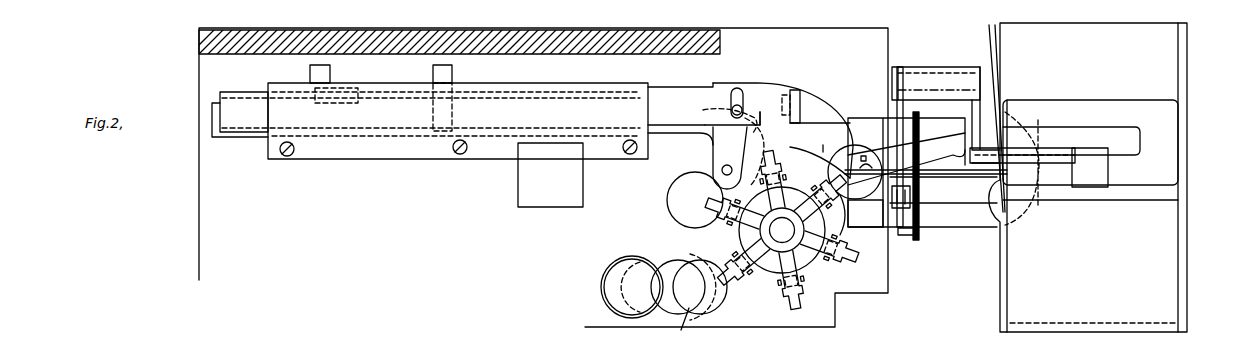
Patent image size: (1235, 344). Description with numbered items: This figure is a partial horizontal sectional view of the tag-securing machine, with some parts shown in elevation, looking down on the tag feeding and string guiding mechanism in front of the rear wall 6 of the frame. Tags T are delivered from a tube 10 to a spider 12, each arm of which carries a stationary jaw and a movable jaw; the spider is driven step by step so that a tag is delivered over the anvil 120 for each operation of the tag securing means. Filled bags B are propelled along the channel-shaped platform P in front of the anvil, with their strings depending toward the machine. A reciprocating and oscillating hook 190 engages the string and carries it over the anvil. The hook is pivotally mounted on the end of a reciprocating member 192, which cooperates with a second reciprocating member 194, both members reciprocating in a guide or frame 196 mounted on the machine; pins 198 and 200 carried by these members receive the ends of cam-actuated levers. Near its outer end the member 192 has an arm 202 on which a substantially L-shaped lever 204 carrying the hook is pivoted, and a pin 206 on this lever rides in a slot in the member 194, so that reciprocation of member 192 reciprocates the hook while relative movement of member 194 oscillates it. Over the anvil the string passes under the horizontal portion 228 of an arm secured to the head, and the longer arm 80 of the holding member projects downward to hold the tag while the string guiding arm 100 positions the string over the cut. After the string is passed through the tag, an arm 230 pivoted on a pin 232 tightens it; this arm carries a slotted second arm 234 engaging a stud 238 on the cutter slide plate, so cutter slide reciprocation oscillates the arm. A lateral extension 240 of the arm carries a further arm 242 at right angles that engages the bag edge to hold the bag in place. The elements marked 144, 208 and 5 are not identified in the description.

The rear wall 6 is at (199, 43).
The tube 10 is at (602, 284).
The spider 12 is at (778, 288).
The arm of holding member 80 is at (864, 158).
The string guiding arm 100 is at (926, 172).
The anvil 120 is at (862, 221).
The bracket block 144 is at (518, 193).
The hook 190 is at (816, 115).
The reciprocating member 192 is at (706, 135).
The second reciprocating member 194 is at (658, 99).
The guide or frame 196 is at (527, 103).
The pin 198 is at (452, 70).
The pin 200 is at (331, 75).
The arm 202 is at (708, 152).
The L-shaped lever 204 is at (763, 143).
The pin 206 is at (742, 112).
The slot pin 208 is at (735, 88).
The horizontal extension of arm 228 is at (922, 188).
The arm 230 is at (978, 103).
The pin 232 is at (932, 78).
The second arm 234 is at (893, 237).
The stud or pin 238 is at (905, 200).
The lateral extension 240 is at (1048, 150).
The second arm 242 is at (1084, 158).
The bar 5 is at (938, 168).
The filled bags B is at (1127, 106).
The platform P is at (1183, 88).
The tag T is at (750, 237).